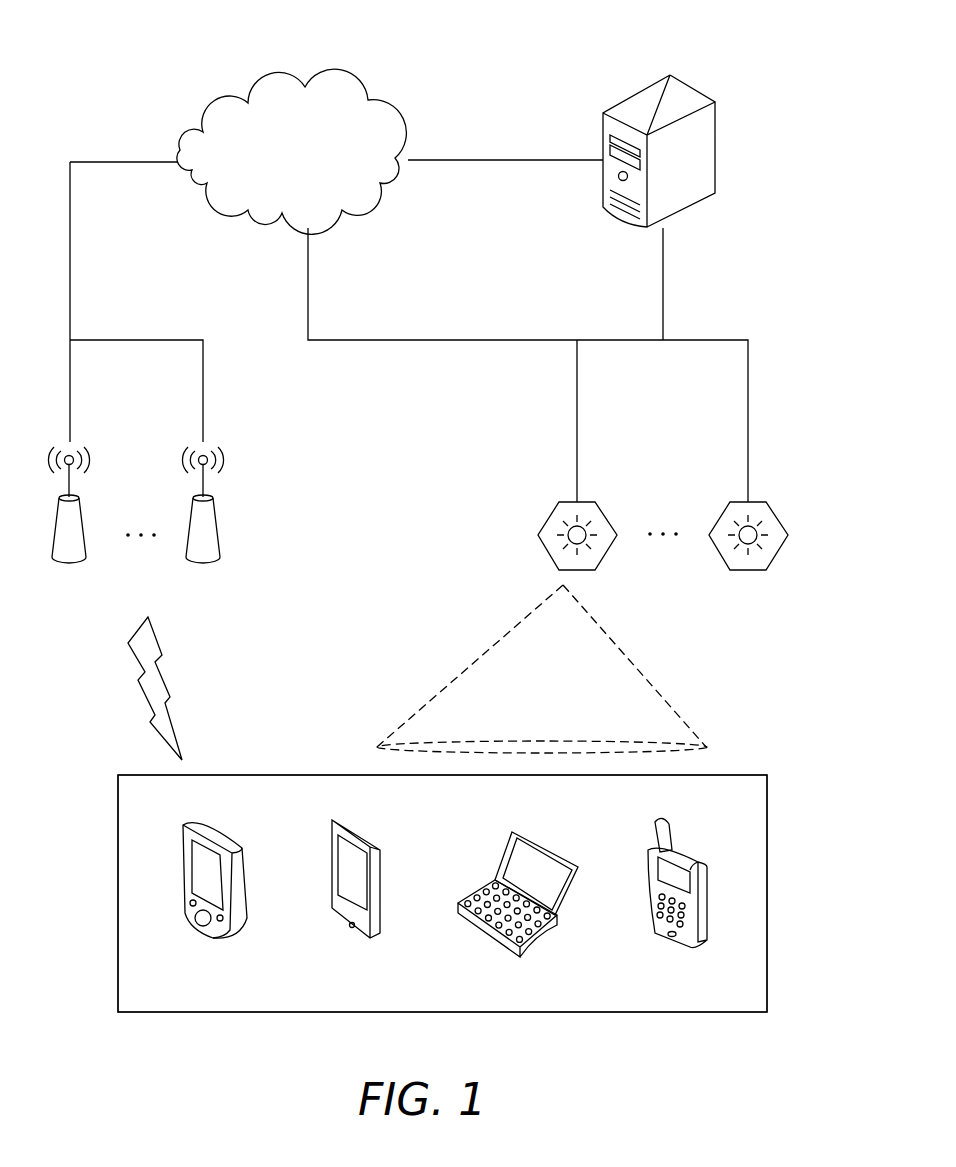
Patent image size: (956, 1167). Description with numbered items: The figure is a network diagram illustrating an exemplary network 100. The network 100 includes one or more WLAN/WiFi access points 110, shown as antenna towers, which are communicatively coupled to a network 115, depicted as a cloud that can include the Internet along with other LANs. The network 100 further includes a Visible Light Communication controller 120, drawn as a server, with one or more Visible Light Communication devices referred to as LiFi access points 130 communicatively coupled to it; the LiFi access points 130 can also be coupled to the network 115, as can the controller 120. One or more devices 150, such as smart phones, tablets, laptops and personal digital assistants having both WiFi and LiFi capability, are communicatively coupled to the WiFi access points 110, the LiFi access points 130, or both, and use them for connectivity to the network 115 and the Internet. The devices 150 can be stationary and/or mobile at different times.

The network 100 is at (170, 42).
The WLAN/WiFi access points 110 is at (215, 527).
The network 115 is at (395, 103).
The Visible Light Communication (VLC) controller 120 is at (717, 138).
The Light Fidelity (LiFi) access points 130 is at (773, 515).
The devices 150 is at (767, 892).